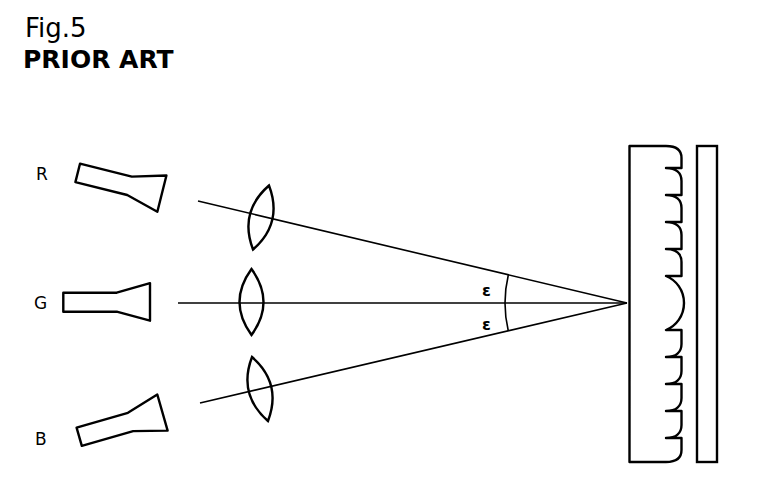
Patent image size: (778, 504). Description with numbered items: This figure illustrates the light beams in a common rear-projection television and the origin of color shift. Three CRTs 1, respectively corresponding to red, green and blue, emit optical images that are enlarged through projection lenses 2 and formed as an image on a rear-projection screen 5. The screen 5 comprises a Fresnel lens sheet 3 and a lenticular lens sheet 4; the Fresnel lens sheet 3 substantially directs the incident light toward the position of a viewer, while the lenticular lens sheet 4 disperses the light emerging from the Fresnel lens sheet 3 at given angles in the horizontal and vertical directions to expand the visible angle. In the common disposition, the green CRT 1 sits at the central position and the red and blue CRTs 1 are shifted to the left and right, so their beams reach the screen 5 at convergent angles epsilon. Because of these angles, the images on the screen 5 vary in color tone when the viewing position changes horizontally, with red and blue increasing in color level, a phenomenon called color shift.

The CRTs 1 is at (102, 170).
The projection lenses 2 is at (263, 196).
The Fresnel lens sheet 3 is at (648, 147).
The lenticular lens sheet 4 is at (708, 147).
The rear-projection screen 5 is at (727, 101).